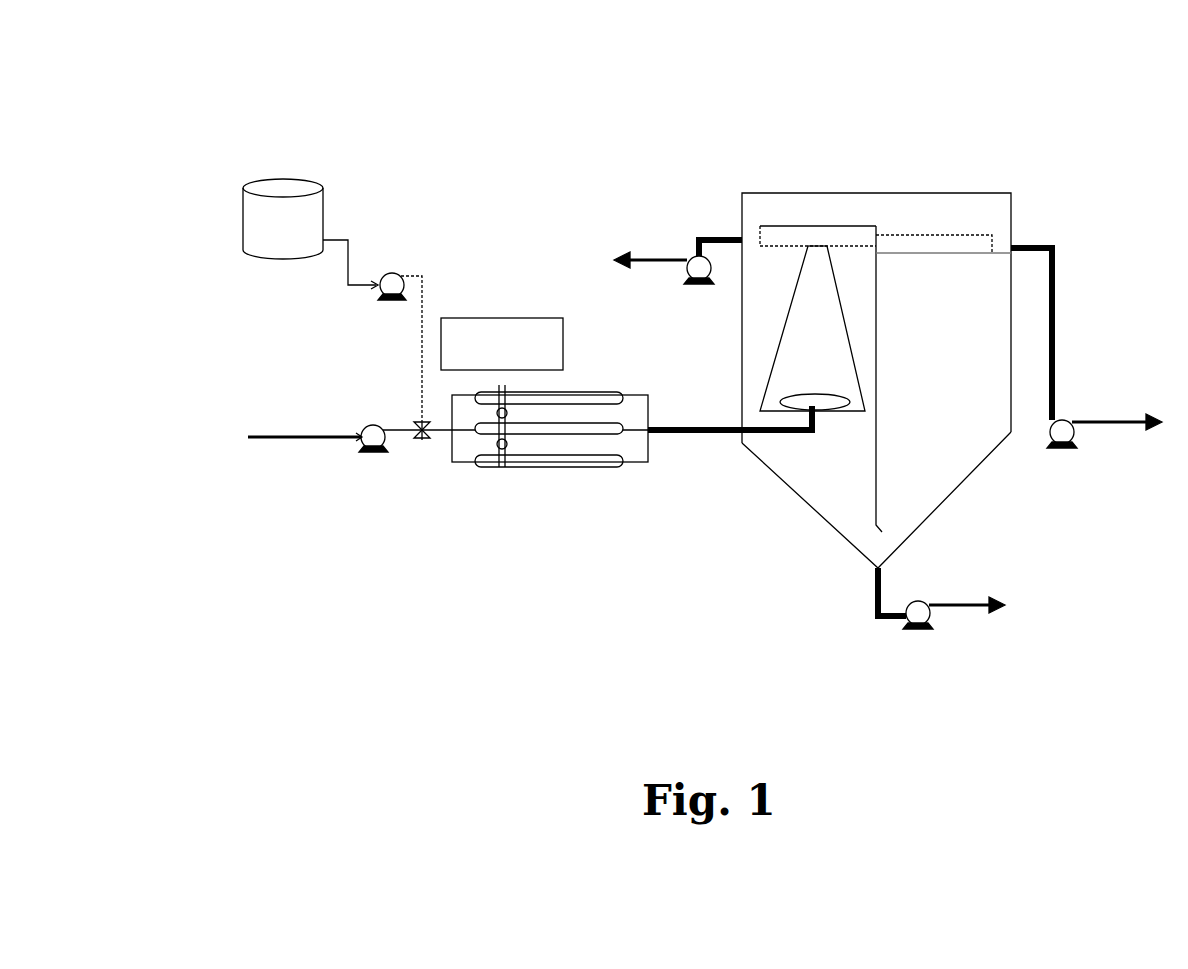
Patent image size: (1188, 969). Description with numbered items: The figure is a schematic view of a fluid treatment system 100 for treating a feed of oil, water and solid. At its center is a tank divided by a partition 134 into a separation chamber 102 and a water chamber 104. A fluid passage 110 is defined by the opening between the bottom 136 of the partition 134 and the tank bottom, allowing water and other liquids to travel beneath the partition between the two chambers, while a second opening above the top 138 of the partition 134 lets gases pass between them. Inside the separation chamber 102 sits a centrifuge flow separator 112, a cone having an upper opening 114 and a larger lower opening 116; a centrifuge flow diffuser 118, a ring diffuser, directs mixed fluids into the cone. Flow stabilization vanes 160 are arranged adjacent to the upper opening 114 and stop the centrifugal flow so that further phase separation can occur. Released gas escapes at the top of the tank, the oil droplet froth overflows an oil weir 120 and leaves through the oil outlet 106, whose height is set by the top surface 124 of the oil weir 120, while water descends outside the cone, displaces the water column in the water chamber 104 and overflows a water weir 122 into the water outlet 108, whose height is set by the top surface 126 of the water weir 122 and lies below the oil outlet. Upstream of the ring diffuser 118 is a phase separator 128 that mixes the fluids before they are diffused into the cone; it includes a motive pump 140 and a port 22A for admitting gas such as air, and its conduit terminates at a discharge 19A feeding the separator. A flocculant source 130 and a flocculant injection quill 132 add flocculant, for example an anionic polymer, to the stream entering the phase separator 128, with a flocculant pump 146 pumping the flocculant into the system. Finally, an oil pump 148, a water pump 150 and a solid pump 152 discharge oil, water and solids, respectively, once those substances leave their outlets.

The fluid treatment system 100 is at (524, 145).
The separation chamber 102 is at (742, 350).
The water chamber 104 is at (1015, 437).
The oil outlet 106 is at (740, 235).
The water outlet 108 is at (1012, 243).
The fluid passage 110 is at (872, 545).
The centrifuge flow separator 112 is at (768, 378).
The upper opening 114 is at (807, 246).
The lower opening 116 is at (850, 408).
The centrifuge flow diffuser 118 is at (824, 398).
The oil weir 120 is at (758, 243).
The water weir 122 is at (1012, 243).
The top surface of the oil weir 124 is at (760, 242).
The top surface of the water weir 126 is at (993, 250).
The phase separator 128 is at (520, 467).
The flocculant source 130 is at (280, 178).
The flocculant injection quill 132 is at (425, 440).
The partition 134 is at (880, 420).
The bottom of the partition 136 is at (897, 537).
The top of the partition 138 is at (876, 226).
The pump 140 is at (370, 455).
The flocculant pump 146 is at (393, 273).
The oil pump 148 is at (689, 258).
The water pump 150 is at (1068, 424).
The solid pump 152 is at (905, 628).
The flow stabilization vanes 160 is at (815, 227).
The port 22A is at (500, 385).
The discharge 19A is at (648, 436).